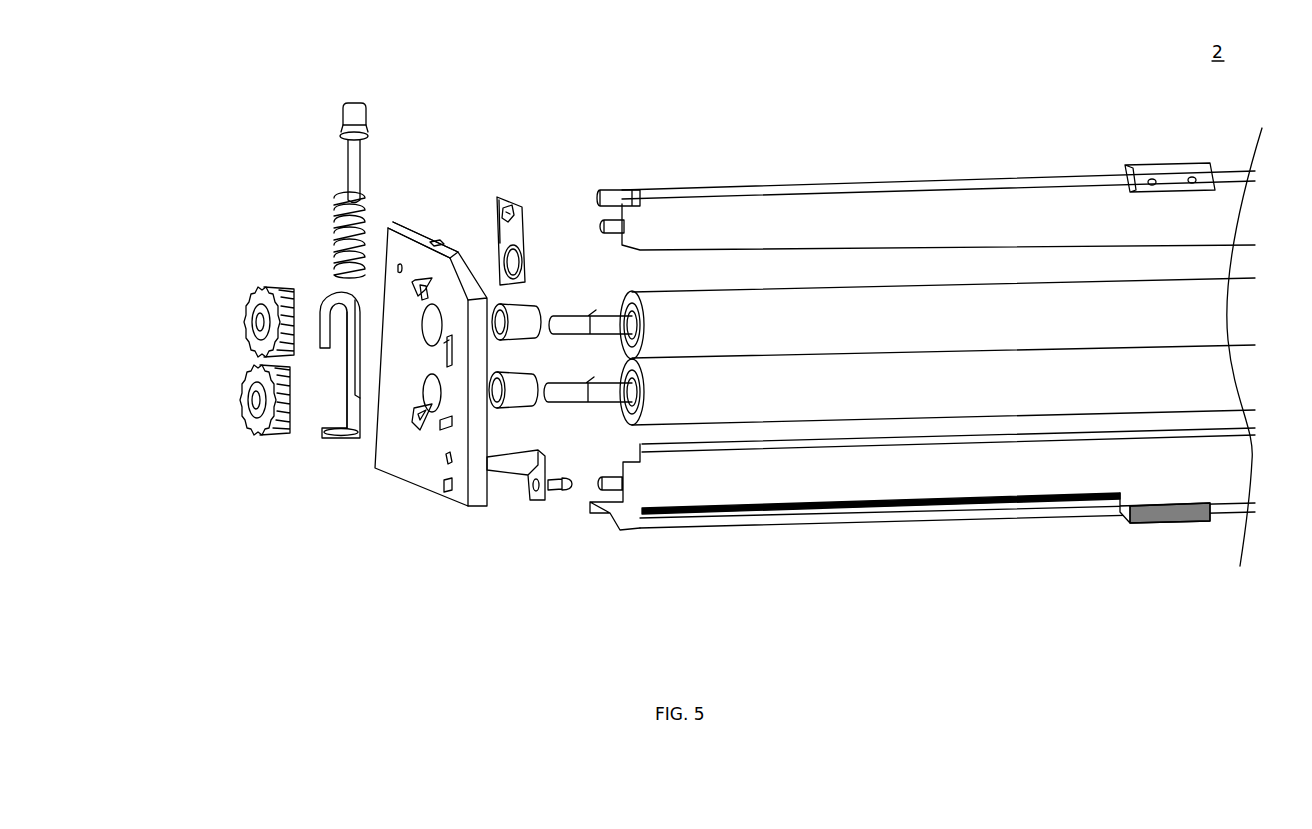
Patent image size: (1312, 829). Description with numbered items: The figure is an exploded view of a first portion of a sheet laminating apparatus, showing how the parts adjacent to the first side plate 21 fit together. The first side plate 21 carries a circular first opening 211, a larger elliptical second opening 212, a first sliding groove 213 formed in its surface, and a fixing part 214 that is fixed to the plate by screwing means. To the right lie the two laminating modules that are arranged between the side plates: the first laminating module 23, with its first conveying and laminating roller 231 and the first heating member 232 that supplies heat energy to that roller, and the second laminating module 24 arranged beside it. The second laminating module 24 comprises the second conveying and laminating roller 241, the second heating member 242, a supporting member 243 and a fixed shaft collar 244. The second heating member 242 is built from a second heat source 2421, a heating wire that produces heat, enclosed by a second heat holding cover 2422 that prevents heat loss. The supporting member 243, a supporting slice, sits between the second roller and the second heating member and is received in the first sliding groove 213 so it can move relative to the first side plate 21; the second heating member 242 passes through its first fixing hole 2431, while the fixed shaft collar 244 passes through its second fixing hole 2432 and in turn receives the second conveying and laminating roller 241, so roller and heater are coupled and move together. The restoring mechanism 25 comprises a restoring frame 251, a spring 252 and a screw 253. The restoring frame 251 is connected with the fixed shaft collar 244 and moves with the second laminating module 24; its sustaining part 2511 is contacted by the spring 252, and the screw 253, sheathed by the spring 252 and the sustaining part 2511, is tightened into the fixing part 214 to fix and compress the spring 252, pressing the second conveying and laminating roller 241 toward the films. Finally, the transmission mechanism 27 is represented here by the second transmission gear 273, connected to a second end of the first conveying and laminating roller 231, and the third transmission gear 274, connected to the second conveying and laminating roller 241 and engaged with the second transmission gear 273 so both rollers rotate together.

The first side plate 21 is at (430, 358).
The first opening 211 is at (431, 408).
The second opening 212 is at (426, 342).
The first sliding groove 213 is at (465, 249).
The fixing part 214 is at (503, 462).
The first laminating module 23 is at (899, 477).
The first conveying and laminating roller 231 is at (735, 402).
The first heating member 232 is at (858, 488).
The second laminating module 24 is at (902, 243).
The second conveying and laminating roller 241 is at (870, 305).
The second heating member 242 is at (926, 191).
The second heat source 2421 is at (641, 185).
The second heat holding cover 2422 is at (698, 208).
The supporting member 243 is at (540, 211).
The first fixing hole 2431 is at (503, 192).
The second fixing hole 2432 is at (518, 268).
The fixed shaft collar 244 is at (515, 322).
The restoring mechanism 25 is at (322, 261).
The restoring frame 251 is at (331, 395).
The sustaining part 2511 is at (341, 437).
The spring 252 is at (348, 195).
The screw 253 is at (367, 113).
The transmission mechanism 27 is at (231, 369).
The second transmission gear 273 is at (250, 437).
The third transmission gear 274 is at (262, 296).